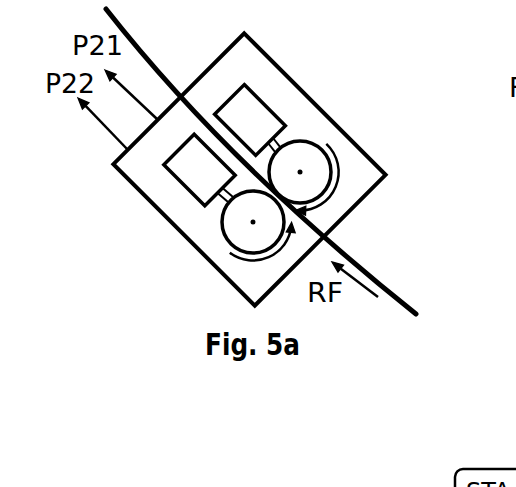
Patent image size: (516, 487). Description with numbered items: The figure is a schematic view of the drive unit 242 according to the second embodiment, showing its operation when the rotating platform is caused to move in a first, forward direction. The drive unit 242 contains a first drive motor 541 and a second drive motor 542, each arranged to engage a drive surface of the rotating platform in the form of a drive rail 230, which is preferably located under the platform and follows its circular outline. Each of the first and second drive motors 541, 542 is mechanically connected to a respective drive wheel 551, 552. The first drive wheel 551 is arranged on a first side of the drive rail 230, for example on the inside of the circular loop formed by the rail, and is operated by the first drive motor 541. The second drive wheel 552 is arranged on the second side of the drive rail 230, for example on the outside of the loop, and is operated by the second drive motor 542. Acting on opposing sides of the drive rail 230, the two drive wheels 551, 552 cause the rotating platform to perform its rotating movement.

The drive unit 242 is at (383, 39).
The first drive motor 541 is at (296, 106).
The second drive motor 542 is at (157, 191).
The first drive wheel 551 is at (348, 156).
The second drive wheel 552 is at (208, 248).
The drive rail 230 is at (311, 161).